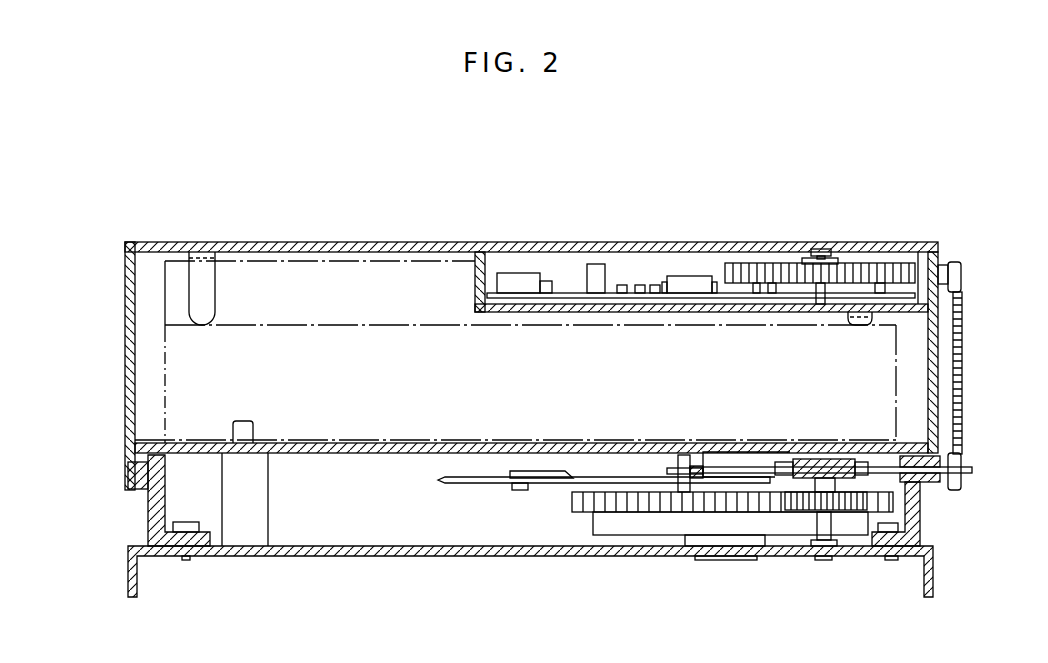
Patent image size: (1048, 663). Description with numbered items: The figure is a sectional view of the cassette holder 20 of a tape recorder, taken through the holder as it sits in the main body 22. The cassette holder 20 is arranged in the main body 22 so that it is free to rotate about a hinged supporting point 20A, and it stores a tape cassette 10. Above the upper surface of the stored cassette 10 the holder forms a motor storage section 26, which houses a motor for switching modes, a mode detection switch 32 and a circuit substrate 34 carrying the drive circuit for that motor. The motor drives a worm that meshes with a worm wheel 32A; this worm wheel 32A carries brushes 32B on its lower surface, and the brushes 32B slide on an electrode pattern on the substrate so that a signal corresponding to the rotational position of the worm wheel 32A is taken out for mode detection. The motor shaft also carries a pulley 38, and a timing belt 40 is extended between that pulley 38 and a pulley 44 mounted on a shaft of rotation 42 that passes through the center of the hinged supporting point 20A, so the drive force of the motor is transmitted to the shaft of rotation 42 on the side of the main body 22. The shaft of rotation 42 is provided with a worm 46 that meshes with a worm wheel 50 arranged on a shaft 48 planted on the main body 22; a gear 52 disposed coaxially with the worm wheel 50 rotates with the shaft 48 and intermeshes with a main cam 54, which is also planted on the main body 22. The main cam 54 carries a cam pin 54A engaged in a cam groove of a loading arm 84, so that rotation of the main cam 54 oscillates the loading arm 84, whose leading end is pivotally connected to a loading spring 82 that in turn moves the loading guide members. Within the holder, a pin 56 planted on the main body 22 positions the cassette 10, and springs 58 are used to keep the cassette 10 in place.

The cassette holder 20 is at (123, 316).
The hinged supporting point 20A is at (140, 471).
The tape cassette 10 is at (160, 348).
The main body 22 is at (128, 552).
The motor storage section 26 is at (676, 259).
The mode detection switch 32 is at (857, 258).
The worm wheel 32A is at (757, 283).
The brushes 32B is at (770, 283).
The circuit substrate 34 is at (613, 293).
The pulley 38 is at (968, 265).
The timing belt 40 is at (958, 352).
The shaft of rotation 42 is at (975, 471).
The pulley 44 is at (970, 463).
The worm 46 is at (828, 478).
The shaft 48 is at (822, 528).
The worm wheel 50 is at (800, 459).
The gear 52 is at (843, 498).
The main cam 54 is at (645, 505).
The cam pin 54A is at (680, 466).
The pin 56 is at (243, 420).
The springs 58 is at (200, 280).
The loading spring 82 is at (445, 483).
The loading arm 84 is at (598, 477).